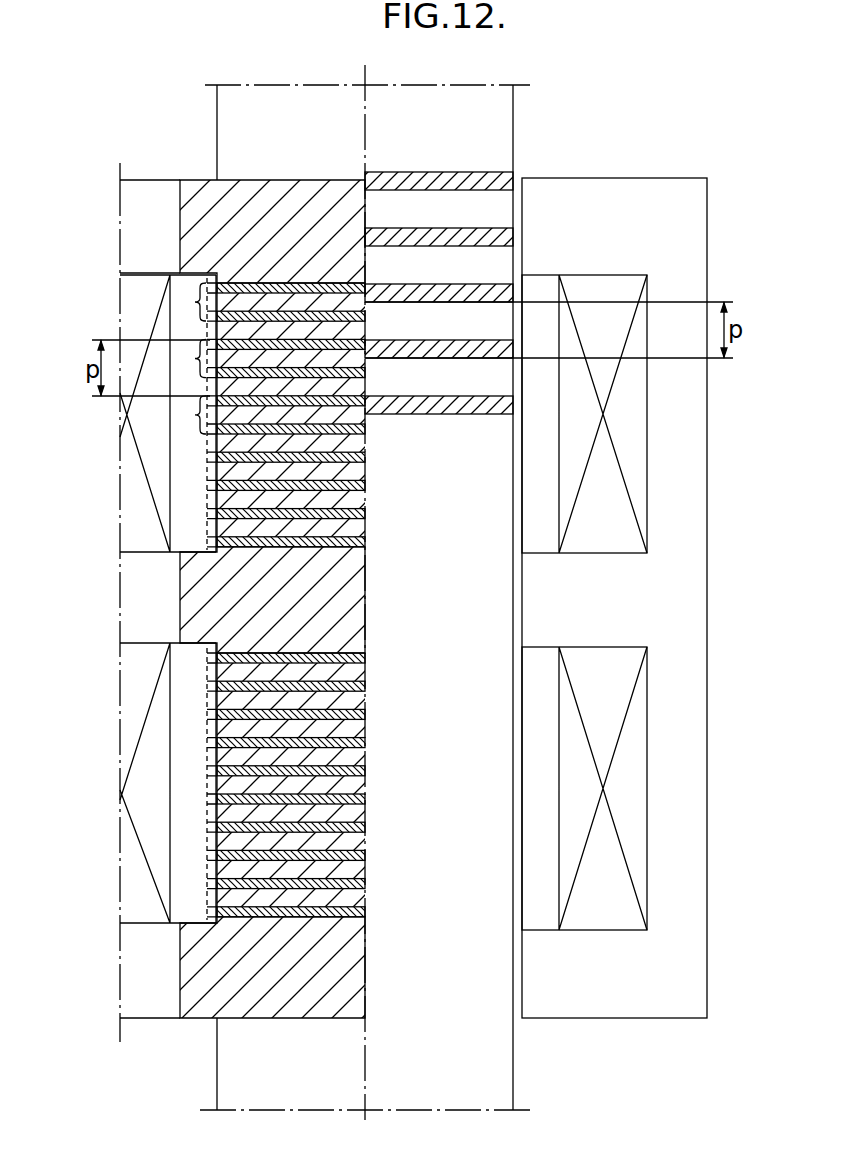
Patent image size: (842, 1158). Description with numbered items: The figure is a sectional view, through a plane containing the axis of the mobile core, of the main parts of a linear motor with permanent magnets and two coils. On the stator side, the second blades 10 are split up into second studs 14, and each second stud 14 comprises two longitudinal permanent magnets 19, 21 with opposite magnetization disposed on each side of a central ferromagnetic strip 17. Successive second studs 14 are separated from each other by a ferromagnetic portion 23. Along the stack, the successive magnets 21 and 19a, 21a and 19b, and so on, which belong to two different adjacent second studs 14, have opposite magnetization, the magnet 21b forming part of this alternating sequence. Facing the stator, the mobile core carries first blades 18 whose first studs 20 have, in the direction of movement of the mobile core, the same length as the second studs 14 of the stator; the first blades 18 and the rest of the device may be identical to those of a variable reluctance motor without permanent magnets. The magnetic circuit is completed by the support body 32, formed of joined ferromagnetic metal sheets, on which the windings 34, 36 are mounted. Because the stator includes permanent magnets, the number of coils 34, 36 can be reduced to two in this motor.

The second blades 10 is at (207, 211).
The second studs 14 is at (193, 358).
The central ferromagnetic strip 17 is at (284, 300).
The first blades 18 is at (485, 125).
The permanent magnet 19 is at (302, 288).
The permanent magnet 19a is at (302, 373).
The permanent magnet 19b is at (348, 487).
The first studs 20 is at (452, 328).
The permanent magnet 21 is at (329, 318).
The permanent magnet 21a is at (284, 386).
The permanent magnet 21b is at (243, 432).
The ferromagnetic portion 23 is at (233, 330).
The support body 32 is at (657, 208).
The coil 34 is at (622, 423).
The coil 36 is at (627, 737).